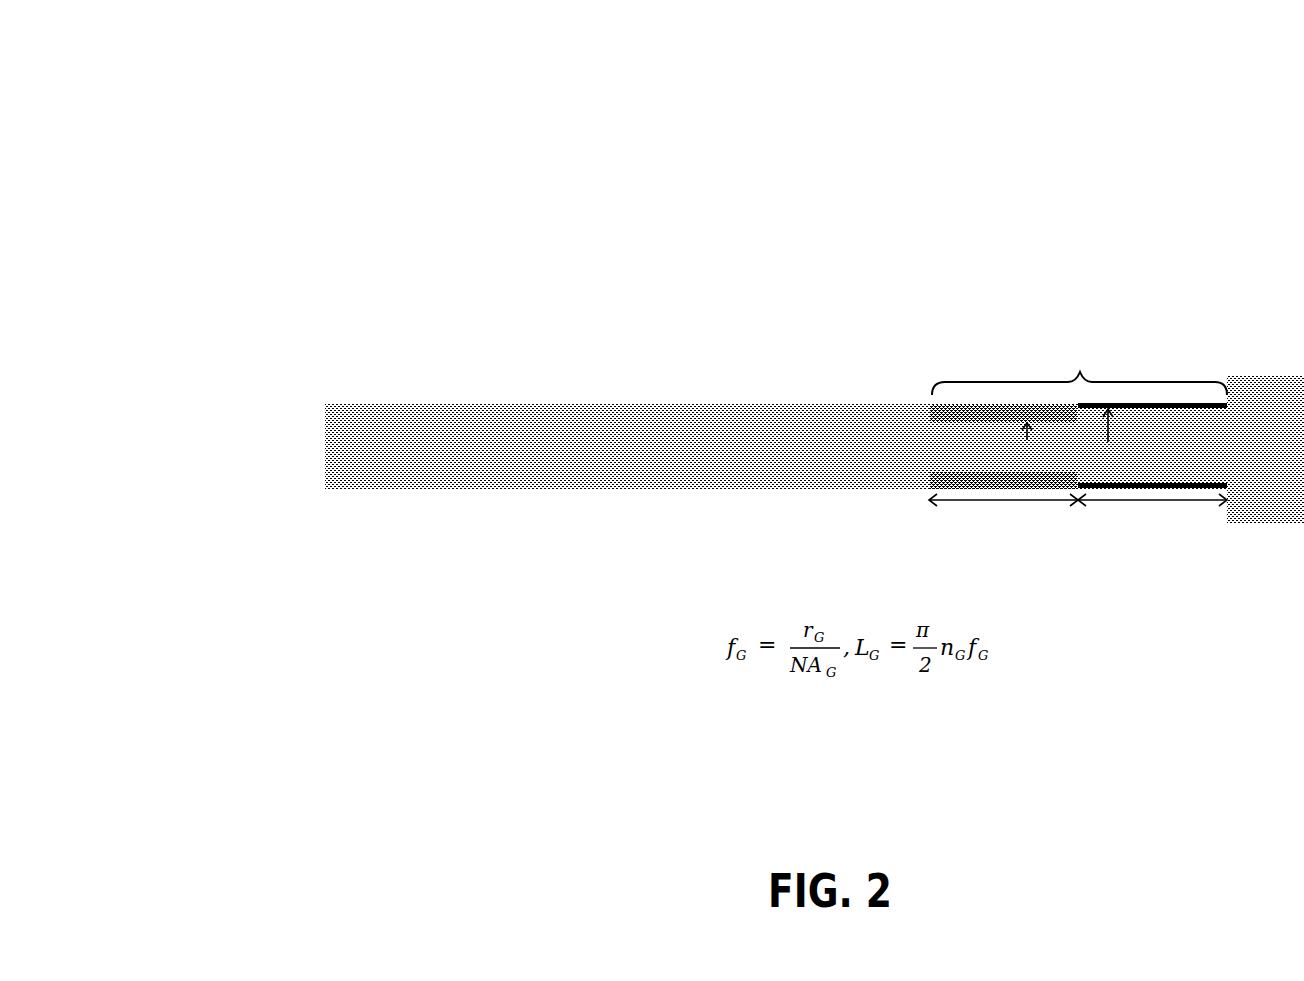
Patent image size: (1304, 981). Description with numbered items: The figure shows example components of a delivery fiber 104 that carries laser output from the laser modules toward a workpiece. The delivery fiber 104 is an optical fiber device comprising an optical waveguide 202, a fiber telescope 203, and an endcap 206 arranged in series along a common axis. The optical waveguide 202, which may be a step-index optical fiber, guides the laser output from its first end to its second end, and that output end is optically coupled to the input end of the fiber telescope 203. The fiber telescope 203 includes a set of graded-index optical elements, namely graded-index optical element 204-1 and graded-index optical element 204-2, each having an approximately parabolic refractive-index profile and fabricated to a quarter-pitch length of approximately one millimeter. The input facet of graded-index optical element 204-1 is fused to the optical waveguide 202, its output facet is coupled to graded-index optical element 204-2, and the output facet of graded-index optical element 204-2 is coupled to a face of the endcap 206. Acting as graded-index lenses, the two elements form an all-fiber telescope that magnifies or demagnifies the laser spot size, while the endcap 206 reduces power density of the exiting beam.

The delivery fiber 104 is at (338, 56).
The optical waveguide 202 is at (655, 455).
The fiber telescope 203 is at (1078, 414).
The graded-index optical element 204-1 is at (1003, 456).
The graded-index optical element 204-2 is at (1213, 471).
The endcap 206 is at (1297, 455).